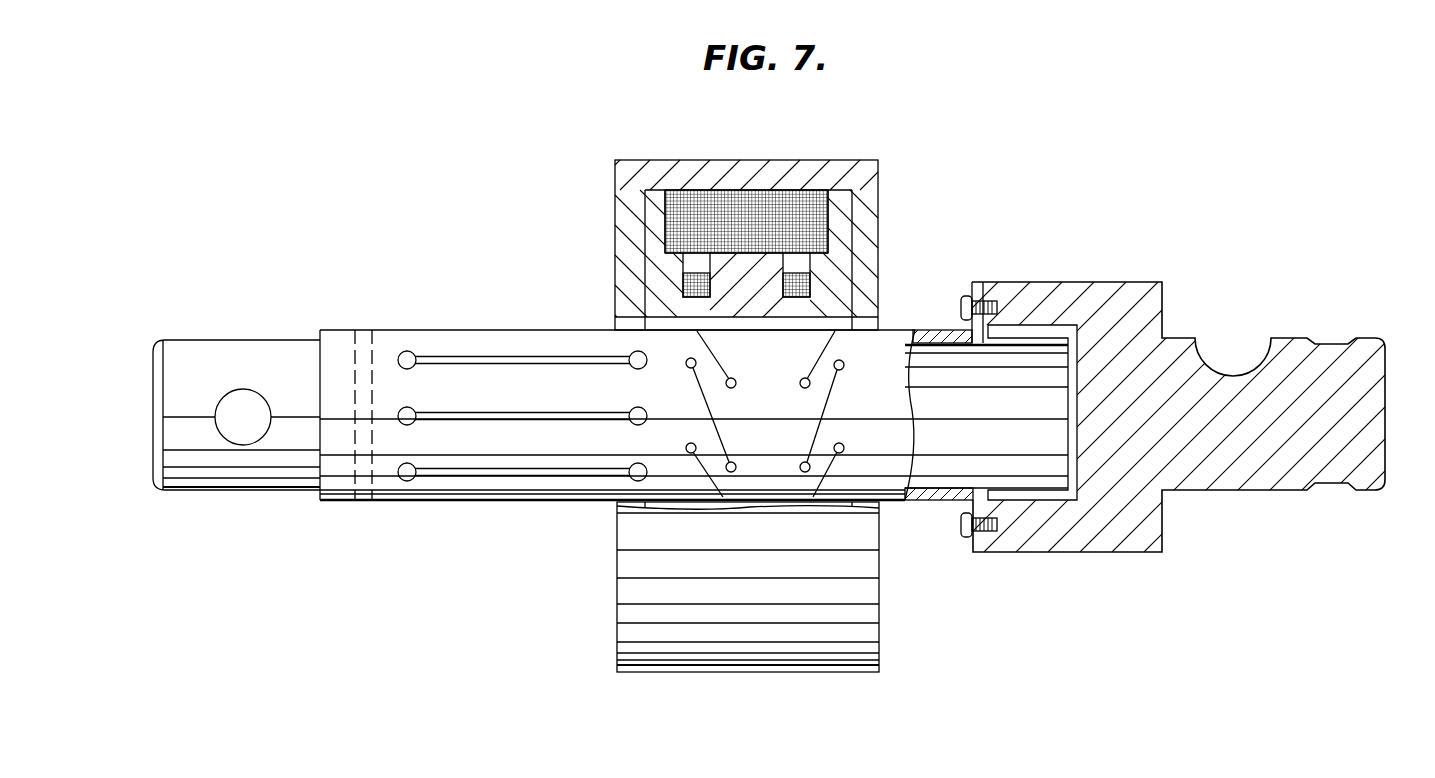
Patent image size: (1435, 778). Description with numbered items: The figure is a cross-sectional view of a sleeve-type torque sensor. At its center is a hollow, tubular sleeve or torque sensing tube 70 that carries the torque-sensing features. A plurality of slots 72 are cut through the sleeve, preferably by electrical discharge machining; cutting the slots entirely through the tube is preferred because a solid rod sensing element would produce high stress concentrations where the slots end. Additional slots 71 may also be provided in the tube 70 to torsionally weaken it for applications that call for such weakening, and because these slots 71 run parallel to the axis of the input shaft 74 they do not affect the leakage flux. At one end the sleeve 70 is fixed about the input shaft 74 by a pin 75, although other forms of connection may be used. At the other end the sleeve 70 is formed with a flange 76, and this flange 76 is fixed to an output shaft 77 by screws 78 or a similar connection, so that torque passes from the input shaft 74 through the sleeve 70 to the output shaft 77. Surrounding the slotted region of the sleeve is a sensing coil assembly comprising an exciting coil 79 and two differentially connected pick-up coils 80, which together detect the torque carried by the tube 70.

The torque sensing tube 70 is at (392, 340).
The slots 71 is at (505, 362).
The slots 72 is at (719, 364).
The input shaft 74 is at (192, 355).
The pin 75 is at (368, 330).
The flange 76 is at (980, 293).
The output shaft 77 is at (1095, 290).
The screws 78 is at (965, 538).
The exciting coil 79 is at (763, 190).
The pick-up coils 80 is at (694, 279).